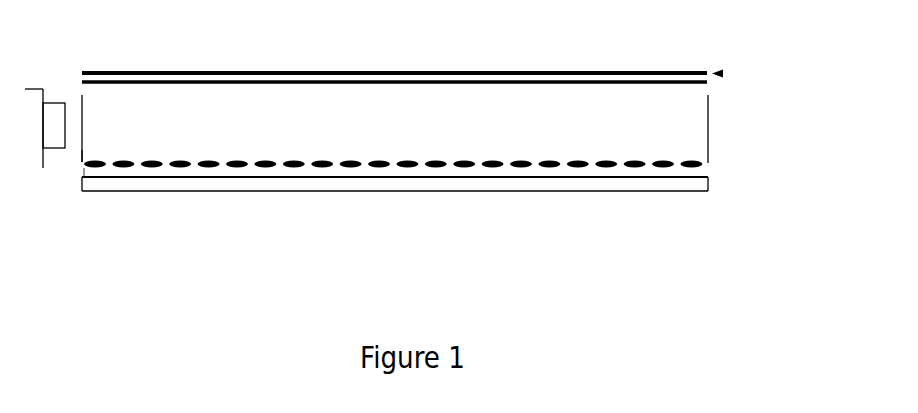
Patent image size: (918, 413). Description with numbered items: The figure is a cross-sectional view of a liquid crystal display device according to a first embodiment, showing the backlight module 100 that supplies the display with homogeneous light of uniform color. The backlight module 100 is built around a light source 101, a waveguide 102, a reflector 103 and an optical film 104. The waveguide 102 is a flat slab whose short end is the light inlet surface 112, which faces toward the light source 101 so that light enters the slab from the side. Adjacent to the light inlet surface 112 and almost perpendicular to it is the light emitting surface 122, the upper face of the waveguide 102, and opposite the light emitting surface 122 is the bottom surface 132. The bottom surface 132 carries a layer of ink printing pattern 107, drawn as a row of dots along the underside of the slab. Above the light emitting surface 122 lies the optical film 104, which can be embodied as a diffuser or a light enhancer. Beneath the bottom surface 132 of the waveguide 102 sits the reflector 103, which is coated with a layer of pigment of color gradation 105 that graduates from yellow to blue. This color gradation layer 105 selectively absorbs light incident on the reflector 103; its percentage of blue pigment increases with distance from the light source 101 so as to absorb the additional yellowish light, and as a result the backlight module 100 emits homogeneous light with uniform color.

The backlight module 100 is at (423, 33).
The light source 101 is at (64, 149).
The waveguide 102 is at (708, 130).
The reflector 103 is at (455, 182).
The optical film 104 is at (723, 73).
The layer of pigment of color gradation 105 is at (708, 178).
The ink printing pattern 107 is at (84, 168).
The light inlet surface 112 is at (82, 120).
The light emitting surface 122 is at (100, 93).
The bottom surface 132 is at (708, 163).